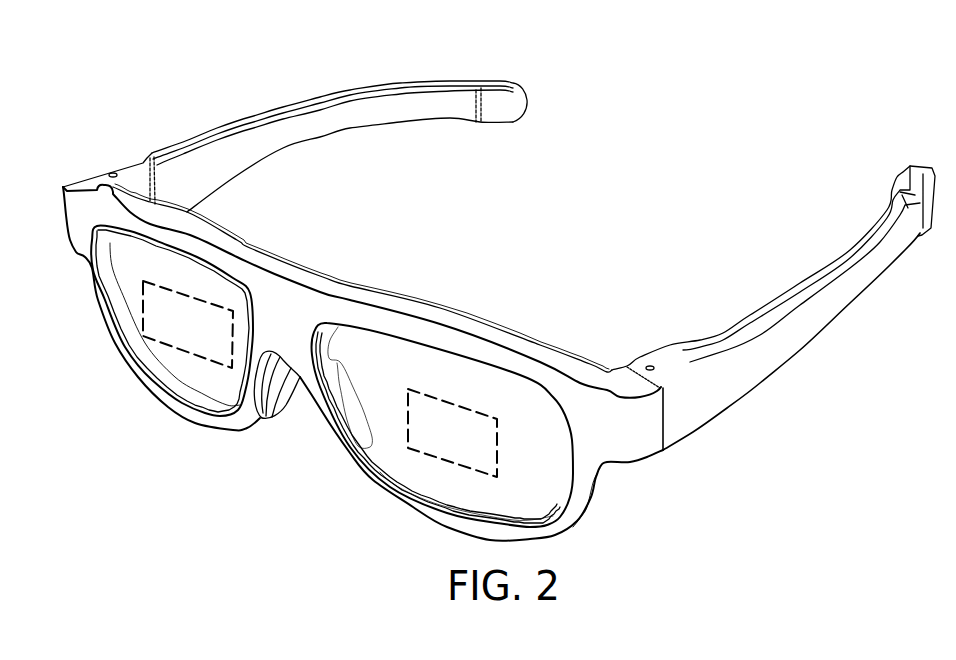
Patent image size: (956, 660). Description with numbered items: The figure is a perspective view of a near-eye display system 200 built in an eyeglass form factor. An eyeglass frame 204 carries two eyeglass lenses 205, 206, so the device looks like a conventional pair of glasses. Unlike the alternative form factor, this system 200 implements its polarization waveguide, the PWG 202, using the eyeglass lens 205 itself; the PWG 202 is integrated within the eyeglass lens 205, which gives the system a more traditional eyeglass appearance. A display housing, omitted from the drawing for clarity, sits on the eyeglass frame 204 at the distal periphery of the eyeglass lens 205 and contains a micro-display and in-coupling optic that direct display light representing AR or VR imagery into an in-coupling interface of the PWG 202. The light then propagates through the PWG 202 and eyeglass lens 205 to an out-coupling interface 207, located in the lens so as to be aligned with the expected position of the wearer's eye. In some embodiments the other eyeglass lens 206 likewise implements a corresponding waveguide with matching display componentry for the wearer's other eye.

The near-eye display system 200 is at (158, 78).
The PWG 202 is at (128, 275).
The eyeglass frame 204 is at (322, 252).
The eyeglass lens 205 is at (213, 383).
The eyeglass lens 206 is at (408, 470).
The out-coupling interface 207 is at (143, 304).